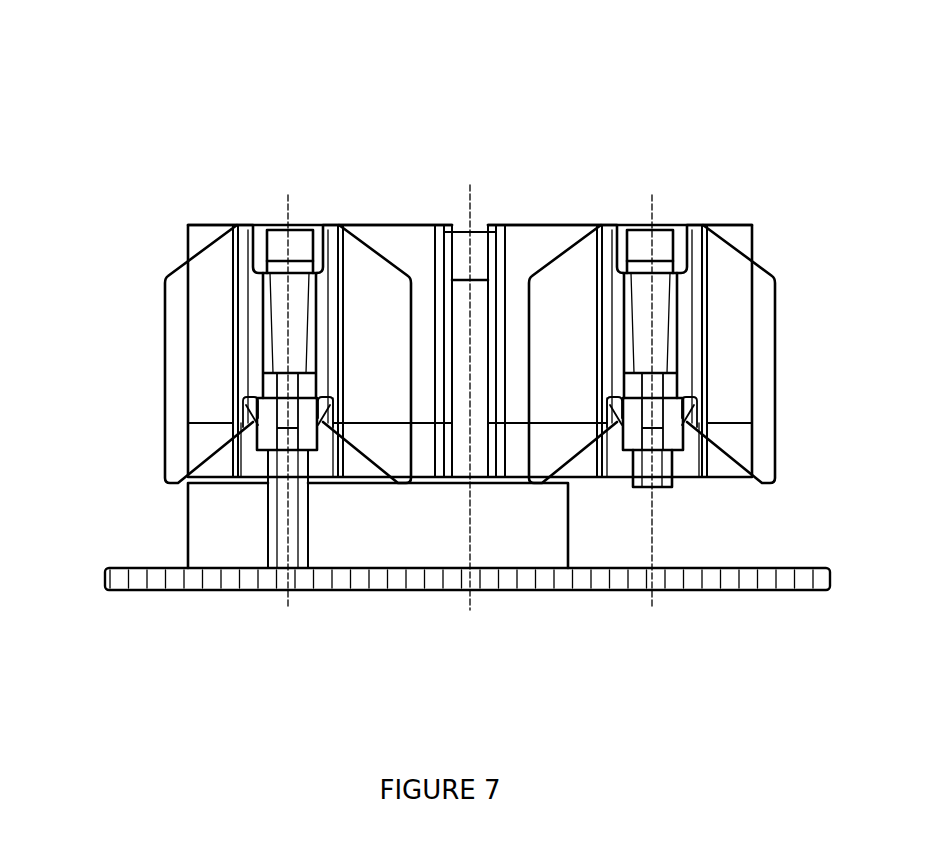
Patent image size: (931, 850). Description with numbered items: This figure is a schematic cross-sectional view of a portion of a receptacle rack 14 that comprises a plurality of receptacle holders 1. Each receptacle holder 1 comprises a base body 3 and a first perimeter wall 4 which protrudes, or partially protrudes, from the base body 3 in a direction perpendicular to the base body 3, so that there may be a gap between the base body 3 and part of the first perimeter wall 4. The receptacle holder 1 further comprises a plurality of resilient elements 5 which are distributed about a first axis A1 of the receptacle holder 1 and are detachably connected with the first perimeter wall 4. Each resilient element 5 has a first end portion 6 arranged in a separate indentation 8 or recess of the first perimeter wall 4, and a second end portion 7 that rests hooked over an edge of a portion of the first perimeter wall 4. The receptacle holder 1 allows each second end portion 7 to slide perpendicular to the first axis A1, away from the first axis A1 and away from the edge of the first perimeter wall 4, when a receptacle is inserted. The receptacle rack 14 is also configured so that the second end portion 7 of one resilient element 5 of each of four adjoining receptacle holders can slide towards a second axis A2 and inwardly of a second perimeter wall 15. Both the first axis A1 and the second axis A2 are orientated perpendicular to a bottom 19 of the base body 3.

The receptacle holder 1 is at (545, 254).
The base body 3 is at (527, 577).
The first perimeter wall 4 is at (333, 224).
The resilient element 5 is at (368, 240).
The first end portion 6 is at (306, 408).
The second end portion 7 is at (312, 232).
The indentation 8 is at (308, 410).
The receptacle rack 14 is at (744, 180).
The second perimeter wall 15 is at (277, 223).
The bottom 19 is at (688, 577).
The first axis A1 is at (470, 222).
The second axis A2 is at (287, 222).